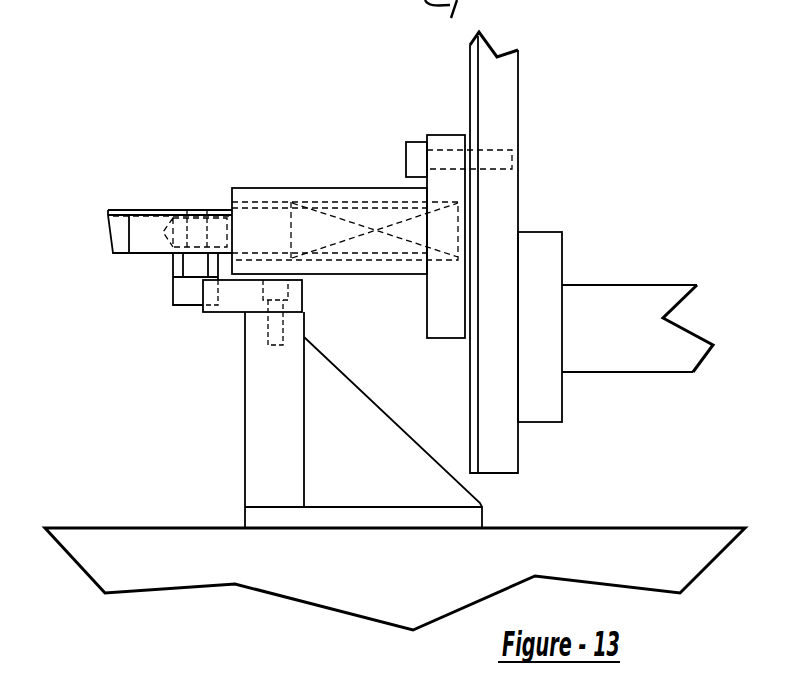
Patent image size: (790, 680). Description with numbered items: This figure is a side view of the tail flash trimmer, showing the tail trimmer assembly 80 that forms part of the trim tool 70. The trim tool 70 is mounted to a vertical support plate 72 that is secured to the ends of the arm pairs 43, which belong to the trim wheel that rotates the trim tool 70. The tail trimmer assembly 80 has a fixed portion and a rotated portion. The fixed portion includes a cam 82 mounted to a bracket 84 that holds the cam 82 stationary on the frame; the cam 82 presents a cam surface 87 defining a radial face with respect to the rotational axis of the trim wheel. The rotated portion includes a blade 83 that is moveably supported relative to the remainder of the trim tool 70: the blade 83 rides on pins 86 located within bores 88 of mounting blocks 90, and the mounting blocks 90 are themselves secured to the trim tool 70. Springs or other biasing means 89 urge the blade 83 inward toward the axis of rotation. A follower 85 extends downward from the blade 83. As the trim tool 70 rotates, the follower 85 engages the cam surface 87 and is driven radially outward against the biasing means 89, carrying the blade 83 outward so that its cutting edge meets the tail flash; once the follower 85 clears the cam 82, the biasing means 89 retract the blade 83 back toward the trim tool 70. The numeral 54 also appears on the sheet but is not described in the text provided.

The tail trimmer assembly 80 is at (133, 175).
The blade 83 is at (197, 210).
The cam surface 87 is at (110, 230).
The follower 85 is at (184, 290).
The cam 82 is at (228, 307).
The bracket 84 is at (304, 318).
The pins 86 is at (277, 228).
The bores 88 is at (362, 202).
The springs or biasing means 89 is at (413, 244).
The mounting blocks 90 is at (382, 188).
The vertical support plate 72 is at (502, 457).
The trim tool 70 is at (615, 170).
The arm pairs 43 is at (633, 287).
The element 54 is at (549, 7).